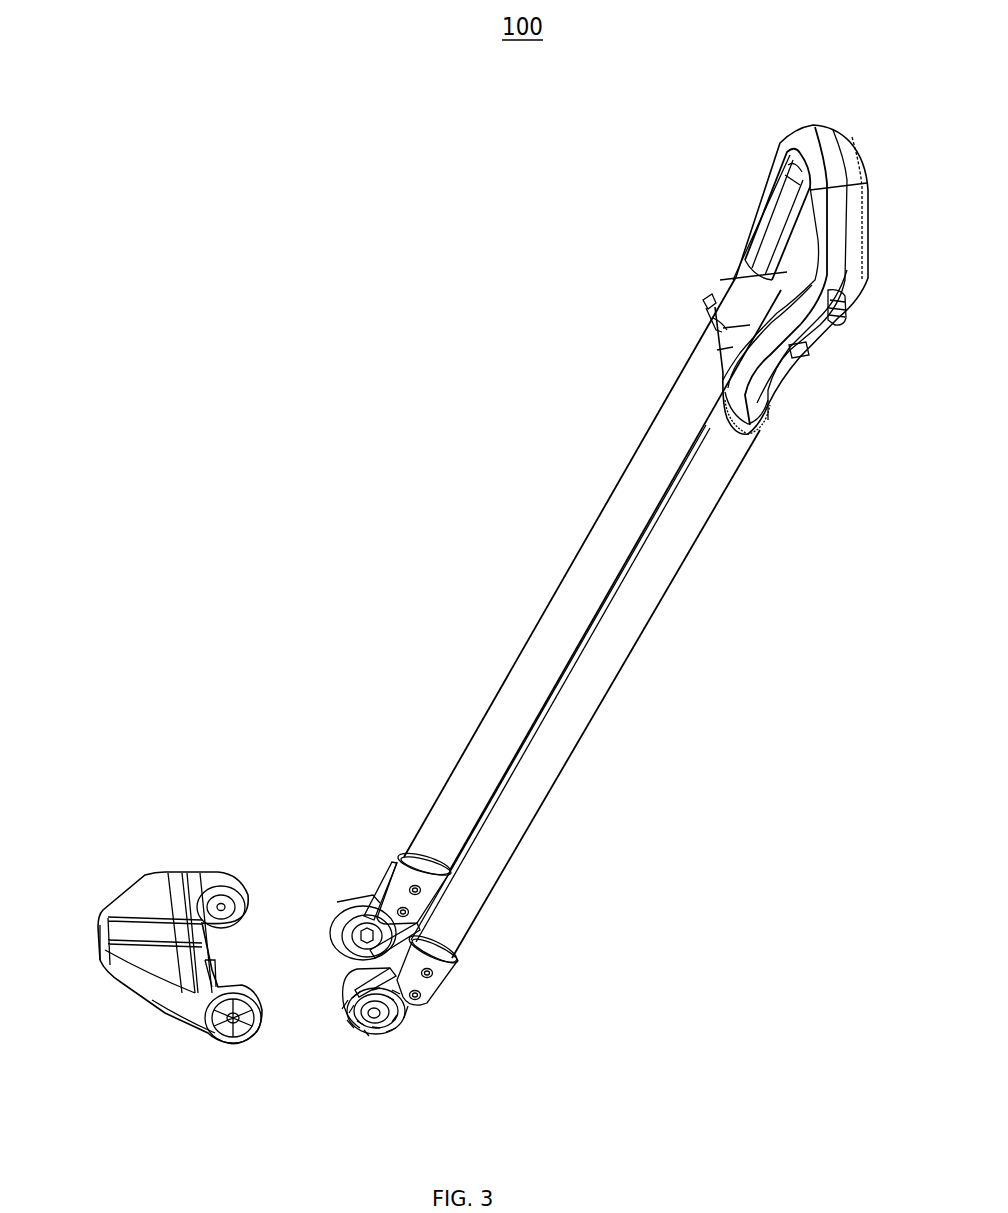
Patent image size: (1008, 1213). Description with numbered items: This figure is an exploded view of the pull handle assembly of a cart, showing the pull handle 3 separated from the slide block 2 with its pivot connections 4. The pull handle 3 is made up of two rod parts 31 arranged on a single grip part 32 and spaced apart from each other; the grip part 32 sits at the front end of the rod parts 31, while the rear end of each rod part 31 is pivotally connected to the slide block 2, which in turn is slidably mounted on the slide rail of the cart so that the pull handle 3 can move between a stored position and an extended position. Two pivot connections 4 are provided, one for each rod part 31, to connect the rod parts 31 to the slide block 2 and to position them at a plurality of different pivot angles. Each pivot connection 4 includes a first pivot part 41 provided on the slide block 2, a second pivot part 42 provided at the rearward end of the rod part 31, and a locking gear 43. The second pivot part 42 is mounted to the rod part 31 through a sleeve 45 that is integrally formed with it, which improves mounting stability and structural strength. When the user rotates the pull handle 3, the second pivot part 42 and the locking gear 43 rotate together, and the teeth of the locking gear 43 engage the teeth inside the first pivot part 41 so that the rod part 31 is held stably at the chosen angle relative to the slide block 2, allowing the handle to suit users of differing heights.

The slide block 2 is at (155, 902).
The pull handle 3 is at (633, 153).
The rod part 31 is at (712, 472).
The grip part 32 is at (750, 263).
The pivot connection 4 is at (303, 755).
The first pivot part 41 is at (218, 875).
The second pivot part 42 is at (340, 905).
The locking gear 43 is at (347, 907).
The sleeve 45 is at (400, 853).